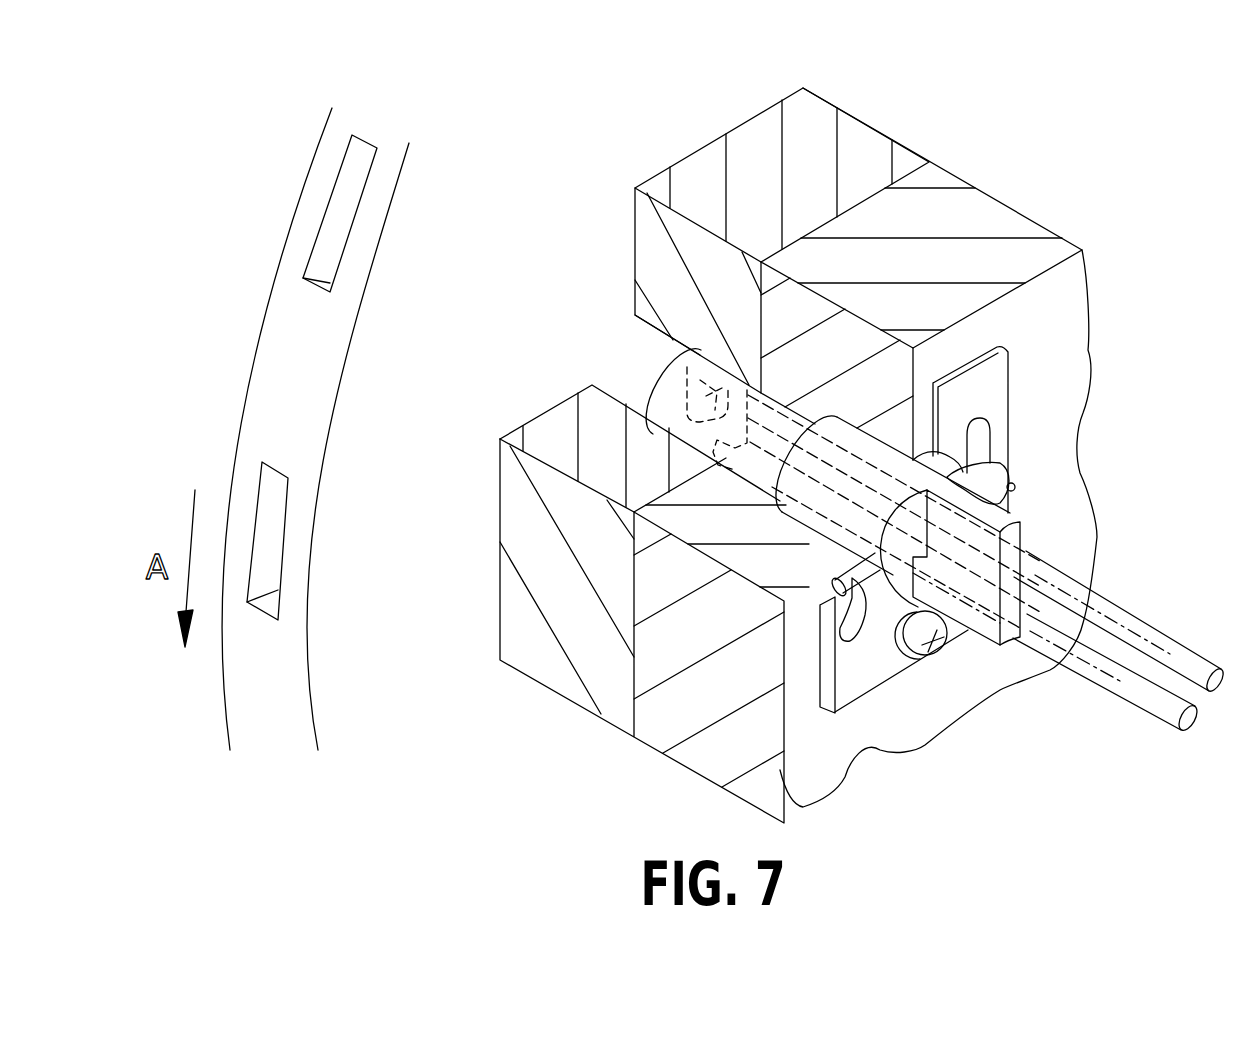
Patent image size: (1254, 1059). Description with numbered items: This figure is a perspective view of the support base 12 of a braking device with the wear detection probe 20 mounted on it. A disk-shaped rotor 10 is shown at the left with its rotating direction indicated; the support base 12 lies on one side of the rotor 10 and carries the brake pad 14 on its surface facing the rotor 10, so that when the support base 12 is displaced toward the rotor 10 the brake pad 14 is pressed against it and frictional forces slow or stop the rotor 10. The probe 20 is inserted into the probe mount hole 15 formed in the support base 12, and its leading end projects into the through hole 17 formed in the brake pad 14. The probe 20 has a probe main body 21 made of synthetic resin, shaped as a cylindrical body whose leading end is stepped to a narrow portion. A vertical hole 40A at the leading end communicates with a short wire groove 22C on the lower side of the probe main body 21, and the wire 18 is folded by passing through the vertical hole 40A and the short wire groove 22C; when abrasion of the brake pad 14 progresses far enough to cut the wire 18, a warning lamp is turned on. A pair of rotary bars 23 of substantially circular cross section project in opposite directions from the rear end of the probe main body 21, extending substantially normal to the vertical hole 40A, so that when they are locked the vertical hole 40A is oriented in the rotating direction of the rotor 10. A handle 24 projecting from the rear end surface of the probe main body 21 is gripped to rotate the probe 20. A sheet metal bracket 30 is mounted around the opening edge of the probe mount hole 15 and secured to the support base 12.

The rotor 10 is at (275, 367).
The support base 12 is at (985, 224).
The brake pad 14 is at (870, 155).
The probe mount hole 15 is at (730, 464).
The through hole 17 is at (660, 428).
The wire 18 is at (1128, 683).
The wear detection probe 20 is at (1035, 523).
The probe main body 21 is at (870, 453).
The short wire groove 22C is at (697, 351).
The rotary bars 23 is at (1005, 486).
The handle 24 is at (1025, 548).
The bracket 30 is at (1013, 343).
The vertical hole 40A is at (668, 381).